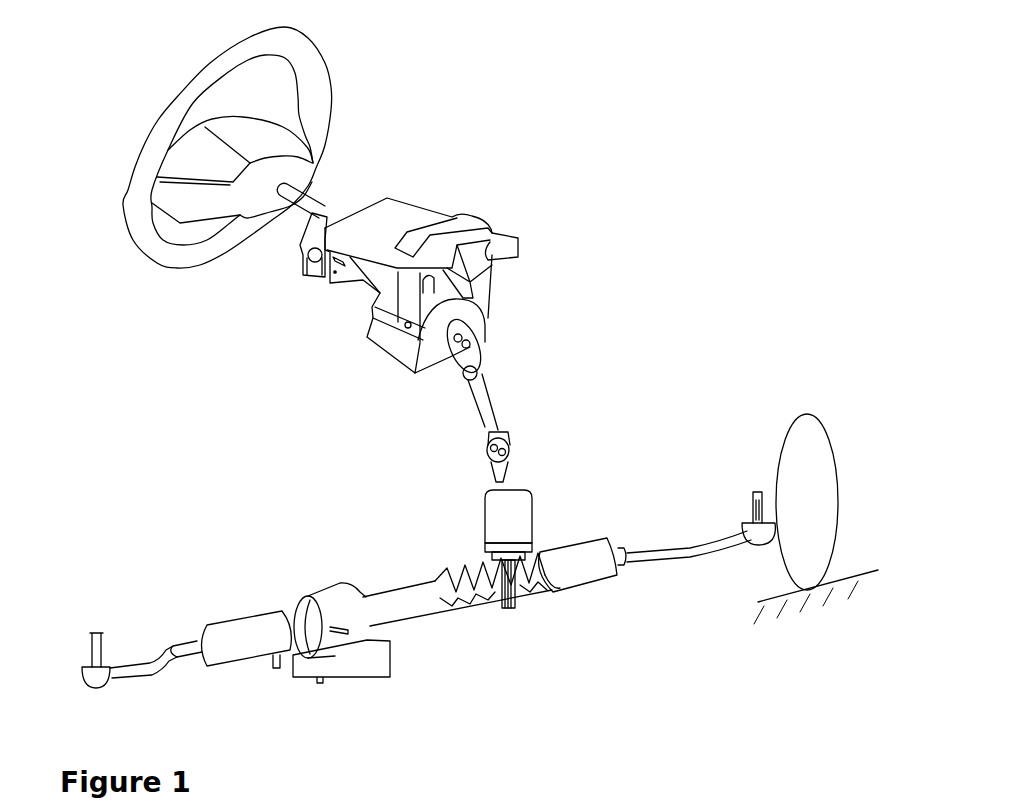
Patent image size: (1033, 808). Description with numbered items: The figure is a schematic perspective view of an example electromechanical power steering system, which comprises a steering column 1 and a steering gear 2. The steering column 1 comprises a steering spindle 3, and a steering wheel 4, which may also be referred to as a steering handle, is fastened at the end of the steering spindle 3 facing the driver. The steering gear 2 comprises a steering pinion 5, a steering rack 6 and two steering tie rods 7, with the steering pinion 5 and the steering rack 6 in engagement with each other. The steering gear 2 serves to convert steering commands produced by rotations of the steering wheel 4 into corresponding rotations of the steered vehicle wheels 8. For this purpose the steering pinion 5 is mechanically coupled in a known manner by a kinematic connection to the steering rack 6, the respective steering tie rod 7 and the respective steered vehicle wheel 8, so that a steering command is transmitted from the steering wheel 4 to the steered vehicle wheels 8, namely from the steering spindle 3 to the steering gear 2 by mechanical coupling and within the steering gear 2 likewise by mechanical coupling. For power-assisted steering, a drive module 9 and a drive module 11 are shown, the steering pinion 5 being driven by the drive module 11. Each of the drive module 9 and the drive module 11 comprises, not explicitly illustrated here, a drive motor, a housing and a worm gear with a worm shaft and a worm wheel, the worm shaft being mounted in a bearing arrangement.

The steering column 1 is at (602, 74).
The steering gear 2 is at (410, 535).
The steering spindle 3 is at (310, 208).
The steering wheel 4 is at (317, 70).
The steering pinion 5 is at (508, 597).
The steering rack 6 is at (445, 595).
The steering tie rod 7 is at (668, 557).
The steered vehicle wheel 8 is at (810, 433).
The drive module 9 is at (343, 602).
The drive module 11 is at (508, 513).